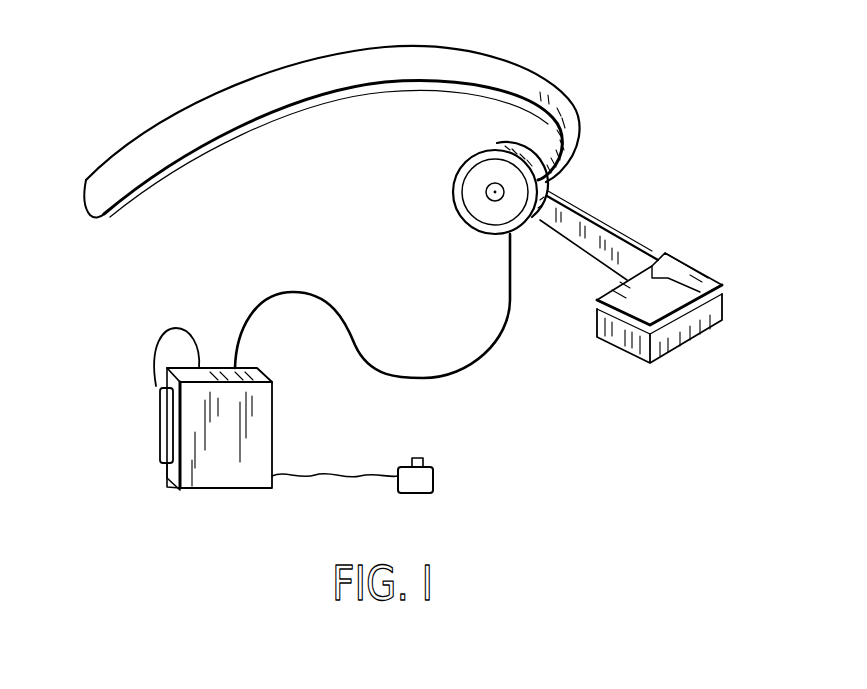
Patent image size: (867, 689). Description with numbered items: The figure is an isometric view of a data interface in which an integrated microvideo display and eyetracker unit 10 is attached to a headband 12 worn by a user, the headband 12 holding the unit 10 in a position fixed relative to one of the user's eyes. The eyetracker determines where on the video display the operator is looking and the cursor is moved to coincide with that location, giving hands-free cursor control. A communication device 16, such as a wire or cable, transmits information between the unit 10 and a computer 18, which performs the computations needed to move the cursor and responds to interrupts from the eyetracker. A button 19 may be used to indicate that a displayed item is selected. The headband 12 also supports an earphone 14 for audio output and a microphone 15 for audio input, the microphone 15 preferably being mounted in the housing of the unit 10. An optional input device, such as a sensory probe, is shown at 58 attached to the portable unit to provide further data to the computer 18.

The integrated microvideo display and eyetracker unit 10 is at (695, 270).
The headband 12 is at (297, 60).
The earphone 14 is at (455, 192).
The microphone 15 is at (632, 366).
The communication device 16 is at (423, 375).
The computer 18 is at (275, 417).
The button 19 is at (434, 472).
The optional input device 58 is at (158, 417).